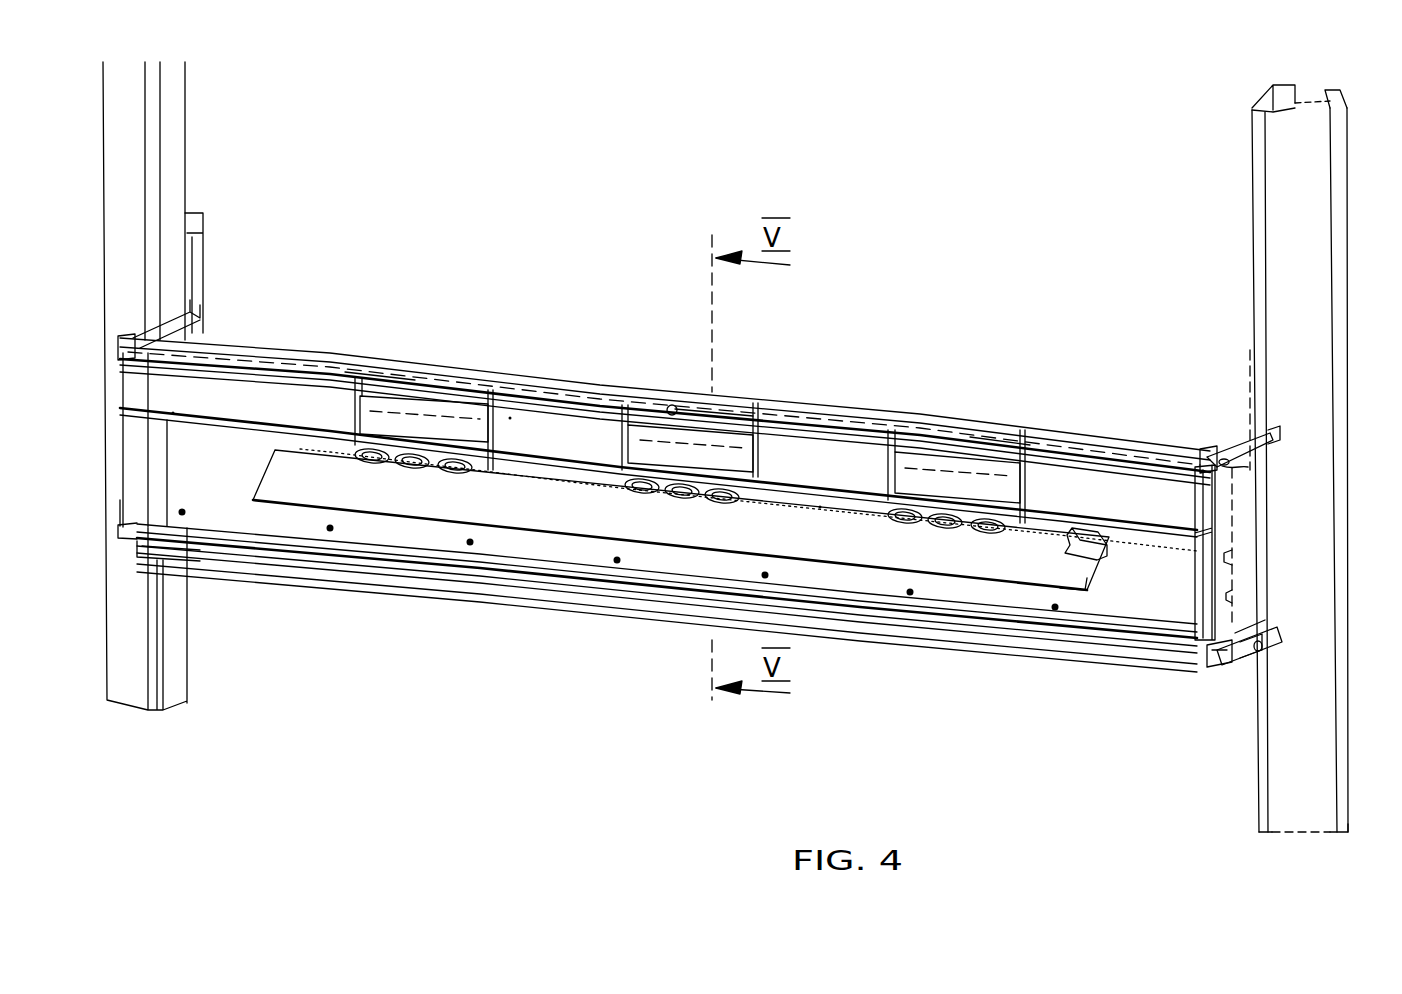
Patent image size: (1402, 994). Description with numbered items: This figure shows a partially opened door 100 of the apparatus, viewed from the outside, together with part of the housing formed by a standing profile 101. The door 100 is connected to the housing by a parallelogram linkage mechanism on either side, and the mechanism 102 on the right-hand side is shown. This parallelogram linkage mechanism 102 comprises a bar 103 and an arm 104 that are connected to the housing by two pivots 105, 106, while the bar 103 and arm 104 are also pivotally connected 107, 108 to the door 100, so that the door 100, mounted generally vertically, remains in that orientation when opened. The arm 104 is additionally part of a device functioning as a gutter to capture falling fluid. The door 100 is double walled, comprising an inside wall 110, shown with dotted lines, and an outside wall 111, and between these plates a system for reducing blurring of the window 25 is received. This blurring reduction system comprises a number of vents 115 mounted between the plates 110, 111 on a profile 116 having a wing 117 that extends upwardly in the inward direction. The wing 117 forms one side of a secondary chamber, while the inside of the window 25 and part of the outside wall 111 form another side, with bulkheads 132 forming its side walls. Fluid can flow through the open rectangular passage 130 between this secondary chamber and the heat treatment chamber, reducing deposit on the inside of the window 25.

The door 100 is at (472, 703).
The standing profile 101 is at (175, 122).
The parallelogram linkage mechanism 102 is at (1233, 397).
The bar 103 is at (1243, 450).
The arm 104 is at (1247, 655).
The pivot 105 is at (1275, 437).
The pivot 106 is at (1268, 634).
The pivotal connection 107 is at (1248, 468).
The pivotal connection 108 is at (1225, 658).
The inside wall 110 is at (1223, 597).
The outside wall 111 is at (230, 489).
The vents 115 is at (983, 519).
The profile 116 is at (1111, 545).
The wing 117 is at (1090, 548).
The rectangular passage 130 is at (458, 408).
The bulkheads 132 is at (330, 390).
The window 25 is at (425, 423).